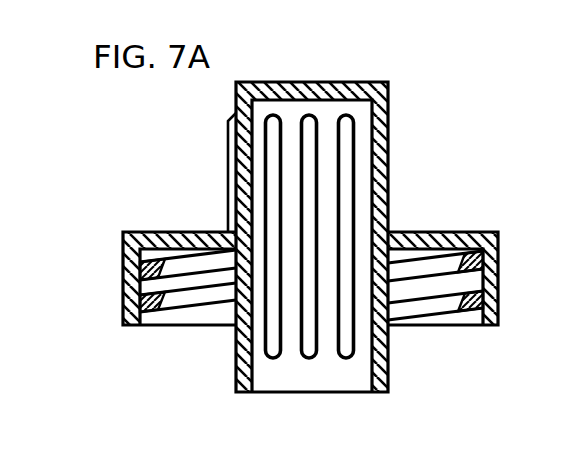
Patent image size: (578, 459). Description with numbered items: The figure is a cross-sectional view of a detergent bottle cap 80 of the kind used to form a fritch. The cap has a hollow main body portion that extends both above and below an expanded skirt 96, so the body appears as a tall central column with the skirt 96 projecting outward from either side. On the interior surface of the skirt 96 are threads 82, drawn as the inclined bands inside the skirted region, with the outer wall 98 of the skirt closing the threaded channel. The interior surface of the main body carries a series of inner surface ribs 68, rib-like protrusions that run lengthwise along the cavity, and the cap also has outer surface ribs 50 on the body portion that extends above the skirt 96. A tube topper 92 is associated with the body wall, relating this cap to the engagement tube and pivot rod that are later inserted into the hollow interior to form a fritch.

The connector assembly 80 is at (295, 211).
The tube topper 92 is at (388, 353).
The inner surface ribs 68 is at (347, 148).
The outer surface ribs 50 is at (227, 185).
The skirt 96 is at (128, 285).
The threads 82 is at (447, 255).
The conductor wire 98 is at (188, 315).